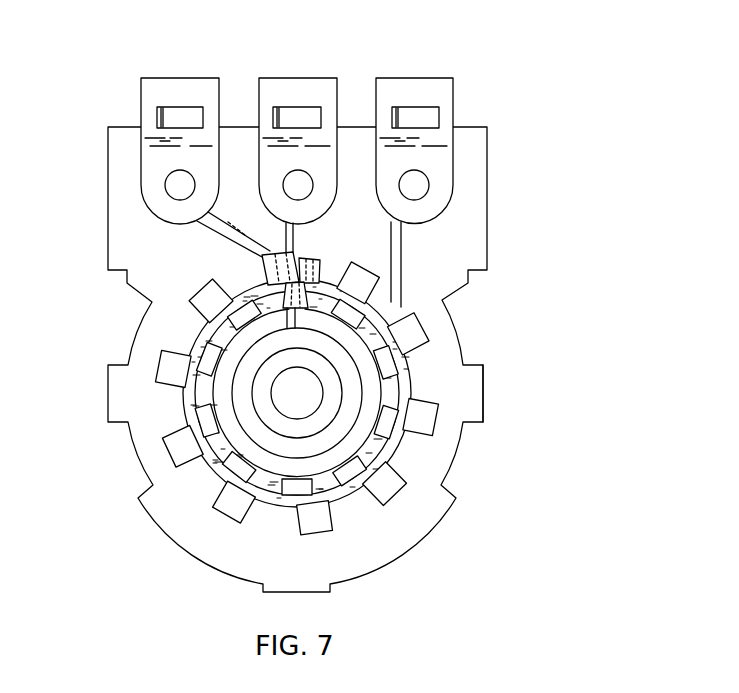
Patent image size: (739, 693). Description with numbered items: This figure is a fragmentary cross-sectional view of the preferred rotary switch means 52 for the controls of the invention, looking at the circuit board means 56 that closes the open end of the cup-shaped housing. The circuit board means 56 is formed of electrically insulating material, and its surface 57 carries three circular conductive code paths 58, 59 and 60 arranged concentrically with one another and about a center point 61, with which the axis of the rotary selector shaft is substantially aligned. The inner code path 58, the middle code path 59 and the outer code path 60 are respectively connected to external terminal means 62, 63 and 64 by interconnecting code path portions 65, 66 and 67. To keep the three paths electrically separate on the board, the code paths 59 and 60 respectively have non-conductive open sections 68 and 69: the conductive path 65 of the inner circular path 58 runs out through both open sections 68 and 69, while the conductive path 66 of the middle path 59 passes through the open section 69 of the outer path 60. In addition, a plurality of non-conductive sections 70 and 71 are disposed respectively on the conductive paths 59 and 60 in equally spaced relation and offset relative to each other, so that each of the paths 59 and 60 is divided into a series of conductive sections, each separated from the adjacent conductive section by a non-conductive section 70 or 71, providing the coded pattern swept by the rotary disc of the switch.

The rotary switch means 52 is at (532, 292).
The circuit board means 56 is at (487, 183).
The surface 57 is at (456, 387).
The inner circular conductive code path 58 is at (287, 450).
The circular conductive code path 59 is at (333, 483).
The outer circular conductive code path 60 is at (400, 453).
The center point 61 is at (295, 392).
The external terminal means 62 is at (302, 77).
The external terminal means 63 is at (428, 77).
The external terminal means 64 is at (190, 77).
The interconnecting code path portion 65 is at (297, 232).
The interconnecting code path portion 66 is at (236, 232).
The interconnecting code path portion 67 is at (404, 251).
The non-conductive open section 68 is at (309, 262).
The non-conductive open section 69 is at (262, 259).
The non-conductive sections 70 is at (205, 355).
The non-conductive sections 71 is at (208, 297).